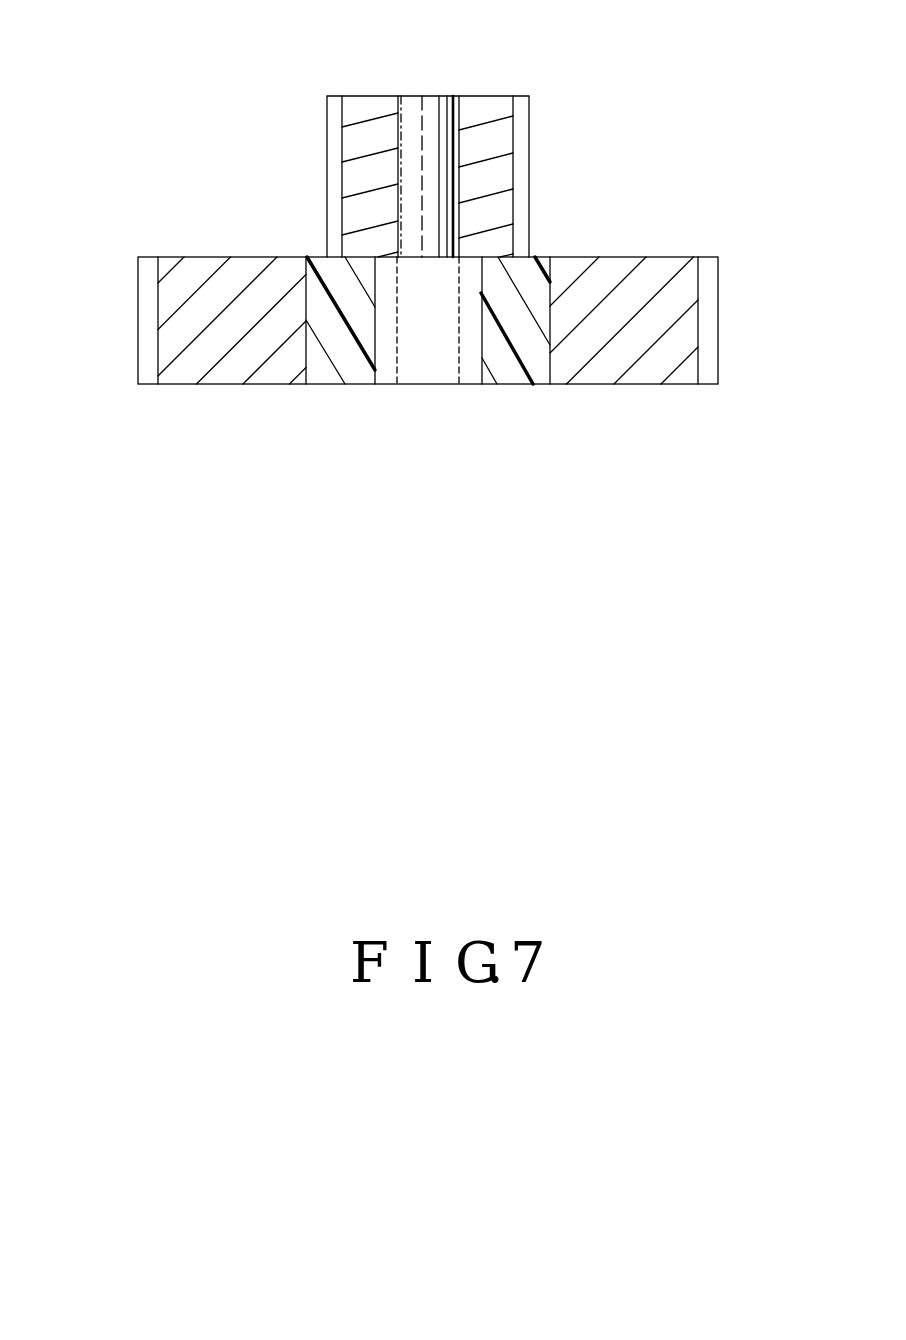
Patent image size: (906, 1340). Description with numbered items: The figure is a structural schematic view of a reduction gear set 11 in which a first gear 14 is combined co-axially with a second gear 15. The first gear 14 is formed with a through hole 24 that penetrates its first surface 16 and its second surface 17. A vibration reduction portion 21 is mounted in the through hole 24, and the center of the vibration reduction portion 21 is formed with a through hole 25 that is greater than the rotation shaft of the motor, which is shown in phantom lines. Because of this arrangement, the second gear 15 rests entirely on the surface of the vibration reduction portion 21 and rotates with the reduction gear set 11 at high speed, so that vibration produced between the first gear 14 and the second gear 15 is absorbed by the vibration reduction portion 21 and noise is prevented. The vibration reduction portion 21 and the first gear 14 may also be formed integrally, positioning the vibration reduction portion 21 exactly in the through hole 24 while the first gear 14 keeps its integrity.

The reduction gear set 11 is at (600, 116).
The first gear 14 is at (138, 352).
The second gear 15 is at (329, 145).
The first surface 16 is at (657, 258).
The second surface 17 is at (265, 385).
The vibration reduction portion 21 is at (505, 362).
The through hole 24 is at (550, 318).
The through hole 25 is at (391, 350).